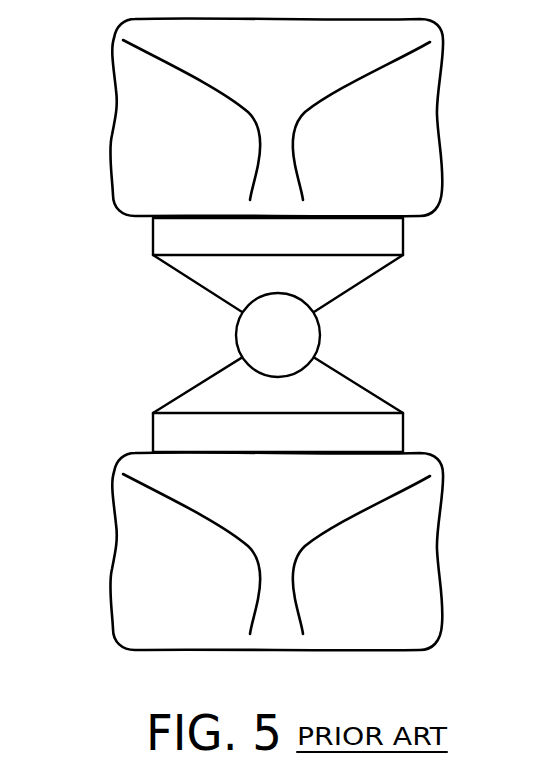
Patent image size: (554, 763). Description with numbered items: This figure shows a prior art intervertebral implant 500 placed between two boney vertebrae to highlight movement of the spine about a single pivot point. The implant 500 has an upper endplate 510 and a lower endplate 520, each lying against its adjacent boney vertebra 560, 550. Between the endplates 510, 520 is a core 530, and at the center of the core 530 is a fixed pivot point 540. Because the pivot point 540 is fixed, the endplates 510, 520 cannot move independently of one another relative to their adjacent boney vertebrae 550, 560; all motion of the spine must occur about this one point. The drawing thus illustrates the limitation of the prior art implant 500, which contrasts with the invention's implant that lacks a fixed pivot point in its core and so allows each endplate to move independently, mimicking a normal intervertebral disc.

The prior art implant 500 is at (280, 336).
The endplate 510 is at (160, 236).
The endplate 520 is at (160, 436).
The core 530 is at (239, 334).
The fixed pivot point 540 is at (302, 350).
The boney vertebra 550 is at (413, 552).
The boney vertebra 560 is at (413, 112).